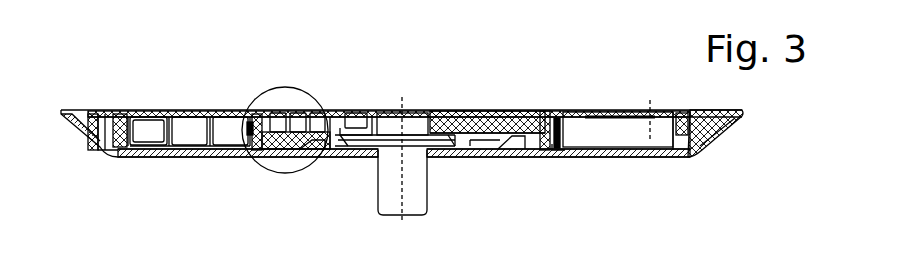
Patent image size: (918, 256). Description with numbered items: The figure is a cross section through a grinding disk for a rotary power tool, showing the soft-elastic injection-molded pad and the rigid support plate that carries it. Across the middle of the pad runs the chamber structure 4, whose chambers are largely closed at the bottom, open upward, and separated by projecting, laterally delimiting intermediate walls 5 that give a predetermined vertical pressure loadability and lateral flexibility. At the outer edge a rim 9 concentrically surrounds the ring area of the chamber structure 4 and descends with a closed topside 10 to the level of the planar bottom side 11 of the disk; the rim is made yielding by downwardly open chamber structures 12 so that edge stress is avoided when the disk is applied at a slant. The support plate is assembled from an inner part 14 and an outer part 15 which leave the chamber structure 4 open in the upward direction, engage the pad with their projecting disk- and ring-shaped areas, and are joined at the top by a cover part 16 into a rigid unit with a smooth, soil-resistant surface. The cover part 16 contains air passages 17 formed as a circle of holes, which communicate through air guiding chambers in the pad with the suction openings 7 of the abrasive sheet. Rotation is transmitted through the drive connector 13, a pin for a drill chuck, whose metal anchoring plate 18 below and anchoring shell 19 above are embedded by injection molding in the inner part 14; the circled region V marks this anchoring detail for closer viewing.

The downwardly open chamber structures 12 is at (97, 88).
The rim 9 is at (100, 140).
The outer part 15 is at (133, 128).
The chamber structure 4 is at (200, 128).
The intermediate walls 5 is at (163, 140).
The detail V is at (315, 43).
The anchoring shell 19 is at (338, 158).
The anchoring plate 18 is at (385, 112).
The drive connector 13 is at (412, 190).
The cover part 16 is at (640, 158).
The planar bottom side 11 is at (505, 112).
The inner part 14 is at (510, 160).
The air passages 17 is at (580, 156).
The suction openings 7 is at (640, 110).
The closed topside 10 is at (717, 138).